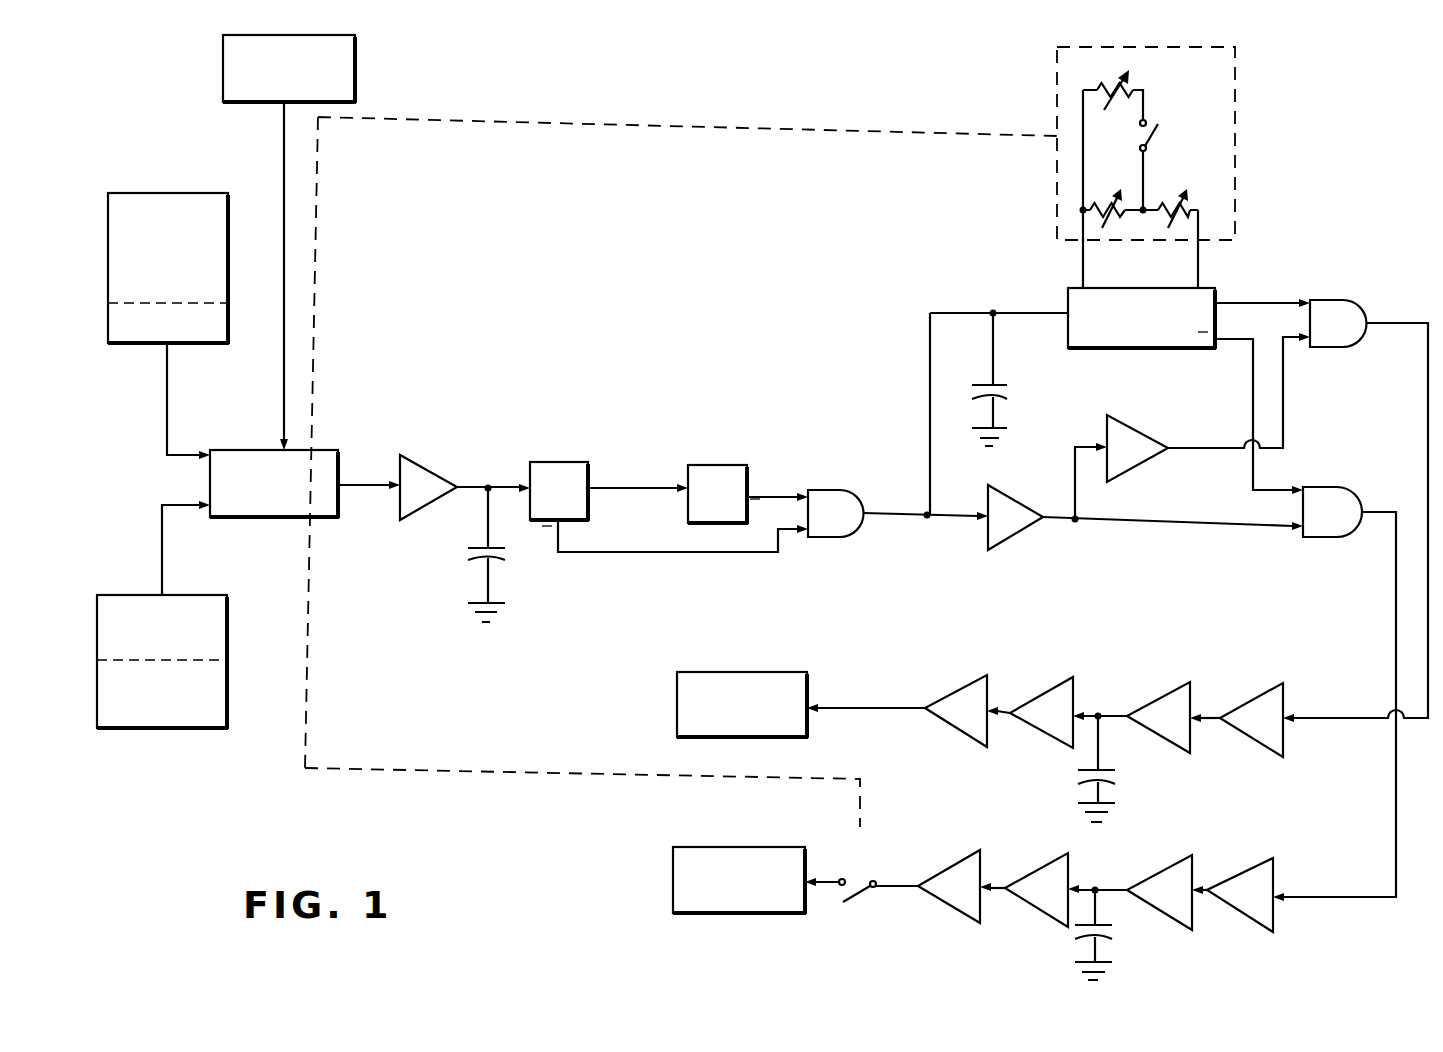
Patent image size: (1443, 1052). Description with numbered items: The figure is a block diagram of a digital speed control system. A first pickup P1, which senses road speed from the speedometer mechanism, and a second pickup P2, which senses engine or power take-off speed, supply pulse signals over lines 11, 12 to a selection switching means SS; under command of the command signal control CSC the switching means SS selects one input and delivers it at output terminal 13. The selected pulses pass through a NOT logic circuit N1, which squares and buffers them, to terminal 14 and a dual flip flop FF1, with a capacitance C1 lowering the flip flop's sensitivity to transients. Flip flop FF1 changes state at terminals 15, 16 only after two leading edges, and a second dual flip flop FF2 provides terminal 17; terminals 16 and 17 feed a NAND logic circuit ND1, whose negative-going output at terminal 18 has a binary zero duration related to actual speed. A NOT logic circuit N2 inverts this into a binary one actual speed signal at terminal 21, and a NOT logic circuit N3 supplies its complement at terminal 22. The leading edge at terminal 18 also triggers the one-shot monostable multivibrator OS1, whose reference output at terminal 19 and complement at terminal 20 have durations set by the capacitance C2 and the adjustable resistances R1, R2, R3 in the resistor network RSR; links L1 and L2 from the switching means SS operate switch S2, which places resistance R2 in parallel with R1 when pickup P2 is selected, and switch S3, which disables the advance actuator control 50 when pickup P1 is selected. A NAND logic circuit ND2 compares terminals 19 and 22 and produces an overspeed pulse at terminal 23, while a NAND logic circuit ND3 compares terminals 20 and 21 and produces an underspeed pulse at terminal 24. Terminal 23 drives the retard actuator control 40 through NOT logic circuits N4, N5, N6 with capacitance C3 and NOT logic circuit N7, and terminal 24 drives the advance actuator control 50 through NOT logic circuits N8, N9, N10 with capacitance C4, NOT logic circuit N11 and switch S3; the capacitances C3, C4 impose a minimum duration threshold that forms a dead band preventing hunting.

The command signal control CSC is at (355, 54).
The second pickup P2 is at (170, 193).
The first pickup P1 is at (197, 728).
The selection switching means SS is at (264, 448).
The input line from pick up 2 12 is at (210, 448).
The input line from pick-up 1 11 is at (210, 516).
The output terminal 13 is at (346, 470).
The NOT logic circuit N1 is at (422, 472).
The terminal 14 is at (455, 482).
The capacitance C1 is at (470, 545).
The dual flip flop circuit FF1 is at (566, 462).
The terminal 15 is at (592, 487).
The terminal 16 is at (562, 521).
The dual flip flop circuit FF2 is at (726, 465).
The terminal 17 is at (752, 492).
The NAND logic circuit ND1 is at (850, 490).
The terminal 18 is at (868, 512).
The electrical or mechanical link L1 is at (318, 197).
The electrical or mechanical link L2 is at (393, 770).
The resistor selection network RSR is at (1094, 167).
The adjustable resistance R1 is at (1108, 200).
The adjustable resistance R2 is at (1134, 84).
The adjustable resistance R3 is at (1186, 200).
The switching means S2 is at (1160, 132).
The one-shot (monostable) multivibrator OS1 is at (1065, 290).
The capacitance C2 is at (1000, 380).
The terminal 19 is at (1218, 300).
The terminal 20 is at (1217, 350).
The NAND logic circuit ND2 is at (1325, 298).
The terminal 23 is at (1366, 302).
The NOT logic circuit N2 is at (1003, 545).
The terminal 21 is at (1043, 522).
The NOT logic circuit N3 is at (1140, 425).
The terminal 22 is at (1172, 446).
The NAND logic circuit ND3 is at (1349, 462).
The terminal 24 is at (1360, 537).
The NOT logic circuit N4 is at (1262, 686).
The NOT logic circuit N5 is at (1170, 686).
The capacitance C3 is at (1110, 765).
The NOT logic circuit N6 is at (1050, 684).
The NOT logic circuit N7 is at (955, 684).
The retard actuator control 40 is at (700, 672).
The NOT logic circuit N8 is at (1252, 870).
The NOT logic circuit N9 is at (1164, 870).
The capacitance C4 is at (1110, 925).
The NOT logic circuit N10 is at (1046, 868).
The NOT logic circuit N11 is at (949, 864).
The switch S3 is at (855, 905).
The advance actuator control 50 is at (673, 865).